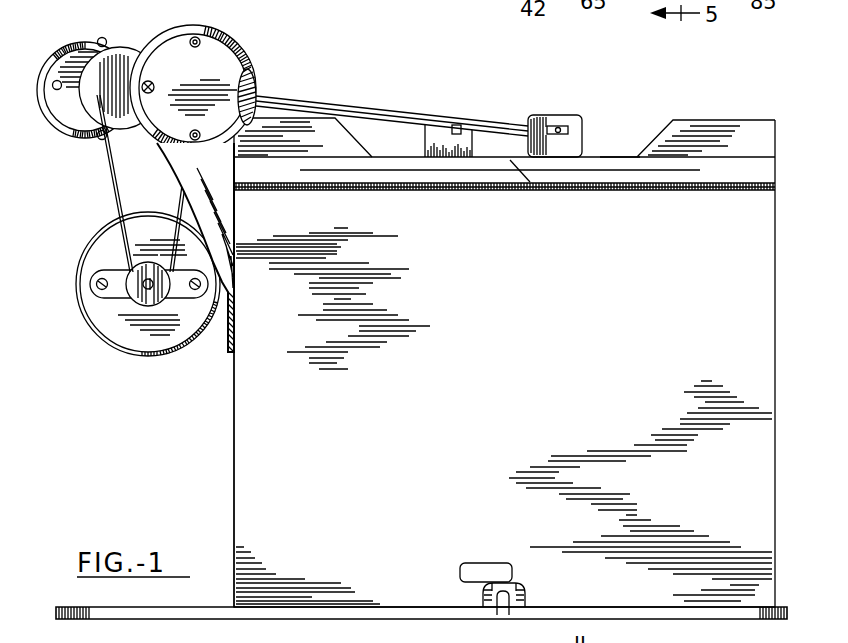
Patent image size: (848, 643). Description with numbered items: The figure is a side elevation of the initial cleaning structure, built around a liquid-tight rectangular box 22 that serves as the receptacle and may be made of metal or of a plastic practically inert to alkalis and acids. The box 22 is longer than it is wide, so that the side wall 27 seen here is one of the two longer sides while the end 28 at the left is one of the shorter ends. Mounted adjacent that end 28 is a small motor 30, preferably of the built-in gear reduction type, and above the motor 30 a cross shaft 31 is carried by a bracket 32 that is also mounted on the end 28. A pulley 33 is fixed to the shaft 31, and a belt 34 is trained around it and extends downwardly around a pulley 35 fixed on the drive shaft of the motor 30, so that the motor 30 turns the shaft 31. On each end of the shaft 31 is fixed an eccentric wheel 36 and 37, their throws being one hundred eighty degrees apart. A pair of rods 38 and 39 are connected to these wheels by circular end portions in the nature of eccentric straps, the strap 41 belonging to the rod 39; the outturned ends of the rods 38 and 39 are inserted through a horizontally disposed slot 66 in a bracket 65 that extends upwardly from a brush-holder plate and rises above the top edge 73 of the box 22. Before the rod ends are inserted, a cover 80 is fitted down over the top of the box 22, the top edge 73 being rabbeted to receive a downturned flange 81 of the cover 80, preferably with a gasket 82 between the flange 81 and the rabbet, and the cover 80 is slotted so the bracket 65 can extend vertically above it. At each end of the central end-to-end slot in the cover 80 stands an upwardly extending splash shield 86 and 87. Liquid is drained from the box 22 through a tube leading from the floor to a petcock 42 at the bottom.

The rectangular box 22 is at (226, 437).
The side wall 27 is at (255, 506).
The end wall 28 is at (232, 476).
The motor 30 is at (133, 327).
The cross shaft 31 is at (152, 83).
The bracket 32 is at (185, 167).
The pulley 33 is at (138, 40).
The belt 34 is at (108, 182).
The pulley 35 is at (140, 295).
The eccentric wheel 36 is at (110, 13).
The eccentric wheel 37 is at (217, 8).
The rod 38 is at (381, 121).
The rod 39 is at (426, 115).
The eccentric strap 41 is at (256, 80).
The petcock 42 is at (498, 602).
The bracket 65 is at (463, 147).
The slot 66 is at (566, 128).
The top edge 73 is at (525, 184).
The cover 80 is at (624, 150).
The downturned flange 81 is at (593, 185).
The gasket 82 is at (502, 188).
The splash shield 86 is at (312, 133).
The splash shield 87 is at (703, 135).